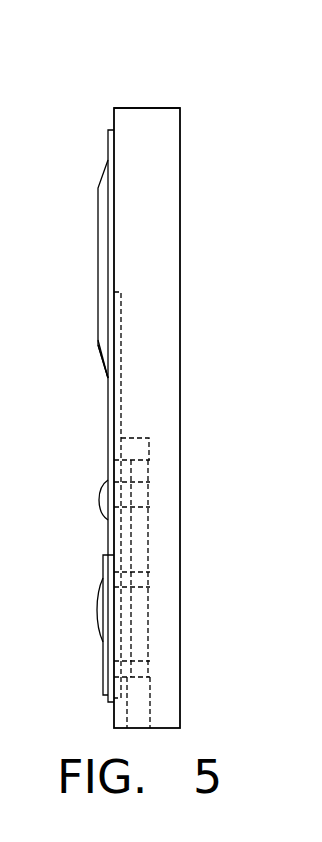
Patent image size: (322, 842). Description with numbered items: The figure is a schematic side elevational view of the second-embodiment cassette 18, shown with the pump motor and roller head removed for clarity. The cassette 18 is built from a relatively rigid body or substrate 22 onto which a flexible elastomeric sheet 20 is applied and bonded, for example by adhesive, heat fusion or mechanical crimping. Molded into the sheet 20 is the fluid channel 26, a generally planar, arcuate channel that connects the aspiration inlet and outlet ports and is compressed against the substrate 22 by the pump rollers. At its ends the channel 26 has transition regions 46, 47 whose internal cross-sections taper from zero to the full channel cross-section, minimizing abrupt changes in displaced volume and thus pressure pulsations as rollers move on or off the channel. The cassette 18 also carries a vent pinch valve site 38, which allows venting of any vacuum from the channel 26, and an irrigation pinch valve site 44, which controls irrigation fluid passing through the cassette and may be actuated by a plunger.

The cassette 18 is at (130, 88).
The substrate 22 is at (113, 115).
The elastomeric sheet 20 is at (108, 150).
The fluid channel 26 is at (98, 222).
The channel transition region 46 is at (98, 350).
The channel transition region 47 is at (103, 361).
The vent pinch valve site 38 is at (98, 500).
The irrigation pinch valve site 44 is at (98, 602).